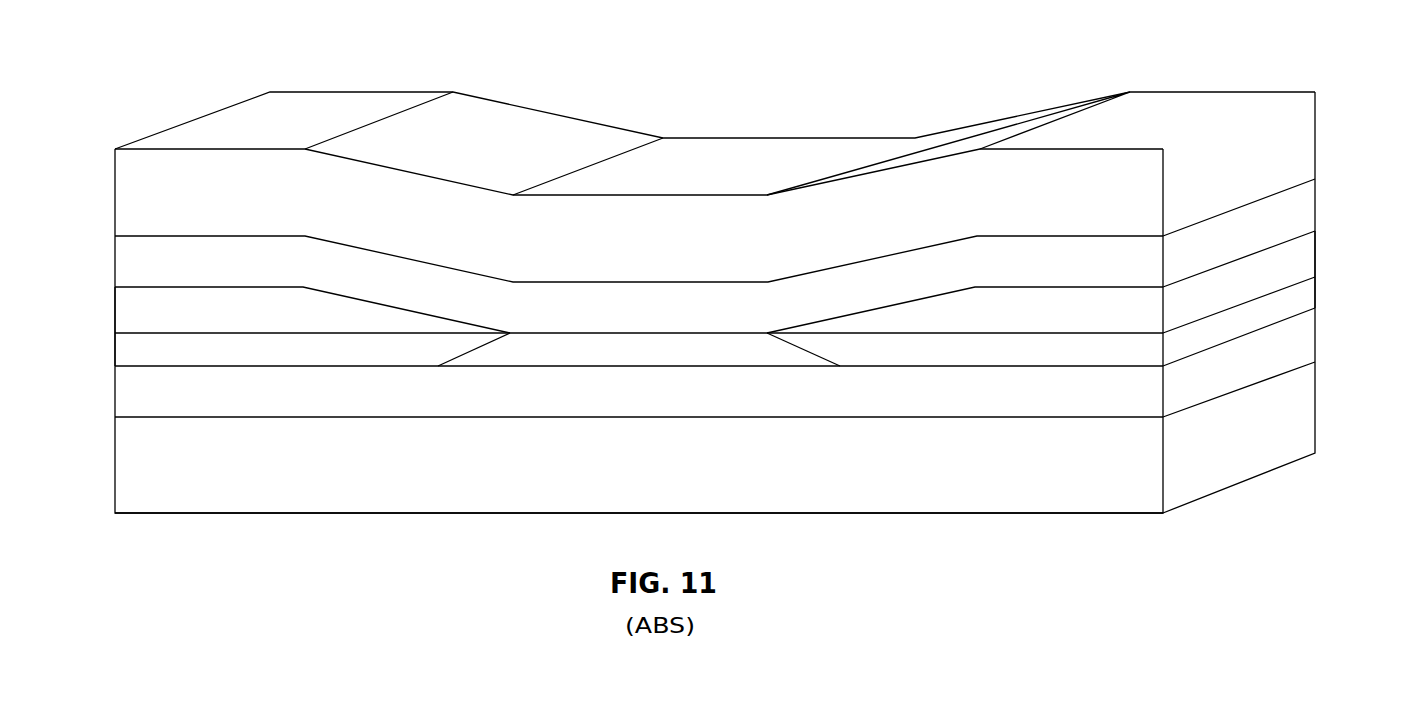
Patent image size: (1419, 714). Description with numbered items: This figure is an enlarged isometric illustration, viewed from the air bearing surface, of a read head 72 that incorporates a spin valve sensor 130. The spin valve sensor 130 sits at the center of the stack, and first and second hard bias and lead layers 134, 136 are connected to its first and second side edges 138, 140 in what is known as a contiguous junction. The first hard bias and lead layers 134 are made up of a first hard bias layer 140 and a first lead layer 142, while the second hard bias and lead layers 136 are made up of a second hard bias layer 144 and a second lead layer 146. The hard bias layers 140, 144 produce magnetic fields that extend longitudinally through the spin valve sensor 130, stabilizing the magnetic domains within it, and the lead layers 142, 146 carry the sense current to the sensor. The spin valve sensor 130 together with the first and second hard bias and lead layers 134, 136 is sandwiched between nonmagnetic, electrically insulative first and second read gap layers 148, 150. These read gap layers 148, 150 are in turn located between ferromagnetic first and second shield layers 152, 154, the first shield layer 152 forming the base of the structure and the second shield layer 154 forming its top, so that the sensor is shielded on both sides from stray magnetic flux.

The read head 72 is at (822, 86).
The spin valve sensor 130 is at (548, 322).
The first hard bias and lead layers 134 is at (110, 287).
The second hard bias and lead layers 136 is at (1324, 228).
The first side edge 138 is at (462, 356).
The first hard bias layer 140 is at (161, 350).
The first lead layer 142 is at (160, 298).
The second hard bias layer 144 is at (1108, 350).
The second lead layer 146 is at (1110, 298).
The first read gap layer 148 is at (417, 407).
The second read gap layer 150 is at (367, 267).
The first shield layer 152 is at (293, 490).
The second shield layer 154 is at (568, 125).